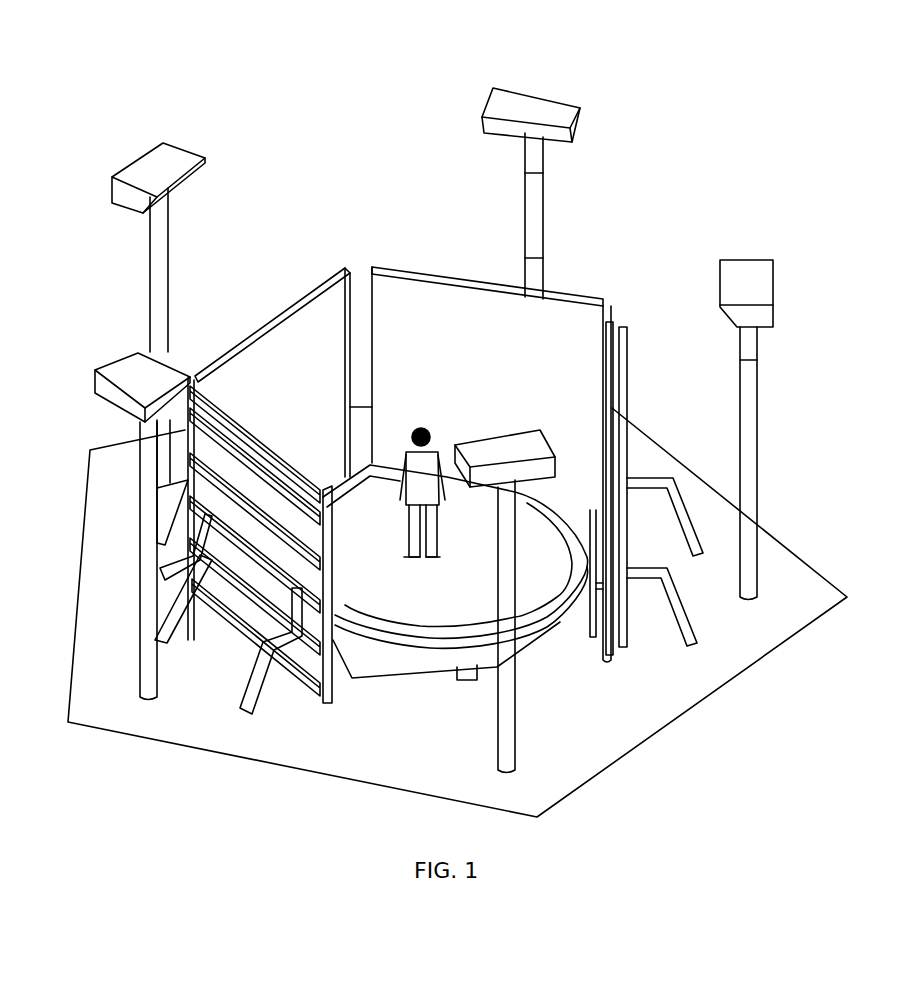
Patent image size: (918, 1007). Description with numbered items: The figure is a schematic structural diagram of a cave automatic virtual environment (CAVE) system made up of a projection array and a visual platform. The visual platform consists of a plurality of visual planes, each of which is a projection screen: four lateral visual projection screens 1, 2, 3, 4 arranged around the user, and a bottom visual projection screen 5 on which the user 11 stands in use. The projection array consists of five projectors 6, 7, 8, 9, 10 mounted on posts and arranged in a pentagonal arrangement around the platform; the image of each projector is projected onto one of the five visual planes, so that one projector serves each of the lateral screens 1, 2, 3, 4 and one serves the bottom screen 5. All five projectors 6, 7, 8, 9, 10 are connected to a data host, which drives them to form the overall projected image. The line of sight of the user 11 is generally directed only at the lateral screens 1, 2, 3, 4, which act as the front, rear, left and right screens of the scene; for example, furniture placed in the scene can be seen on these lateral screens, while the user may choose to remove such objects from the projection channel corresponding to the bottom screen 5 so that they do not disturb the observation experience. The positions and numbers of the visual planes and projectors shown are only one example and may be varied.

The lateral visual projection screen 1 is at (437, 307).
The lateral visual projection screen 2 is at (310, 358).
The lateral visual projection screen 3 is at (260, 442).
The lateral visual projection screen 4 is at (611, 382).
The bottom visual projection screen 5 is at (412, 610).
The projector 6 is at (157, 173).
The projector 7 is at (530, 108).
The projector 8 is at (752, 283).
The projector 9 is at (508, 447).
The projector 10 is at (138, 383).
The user 11 is at (424, 428).